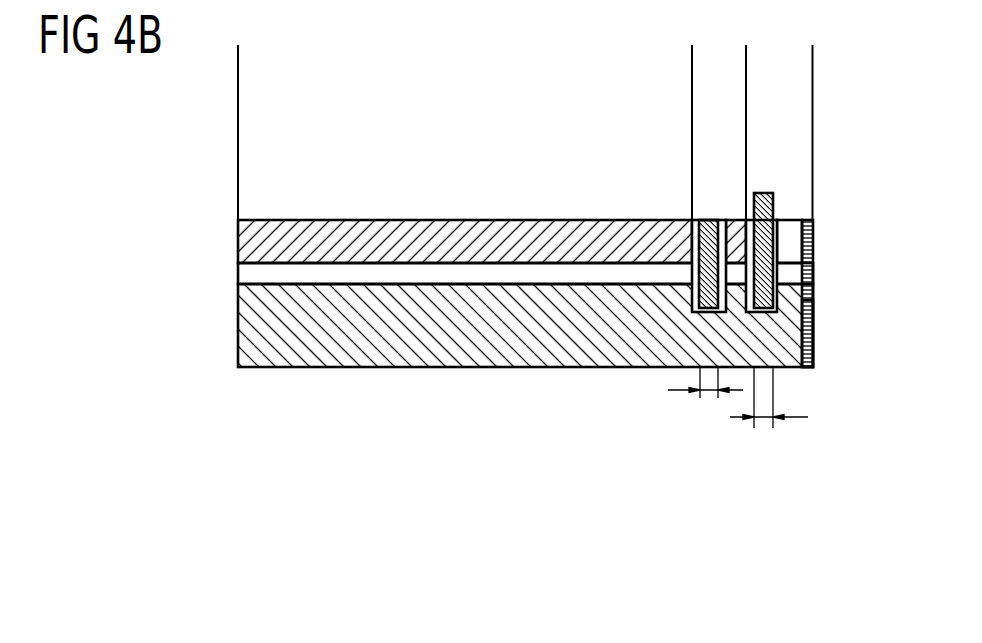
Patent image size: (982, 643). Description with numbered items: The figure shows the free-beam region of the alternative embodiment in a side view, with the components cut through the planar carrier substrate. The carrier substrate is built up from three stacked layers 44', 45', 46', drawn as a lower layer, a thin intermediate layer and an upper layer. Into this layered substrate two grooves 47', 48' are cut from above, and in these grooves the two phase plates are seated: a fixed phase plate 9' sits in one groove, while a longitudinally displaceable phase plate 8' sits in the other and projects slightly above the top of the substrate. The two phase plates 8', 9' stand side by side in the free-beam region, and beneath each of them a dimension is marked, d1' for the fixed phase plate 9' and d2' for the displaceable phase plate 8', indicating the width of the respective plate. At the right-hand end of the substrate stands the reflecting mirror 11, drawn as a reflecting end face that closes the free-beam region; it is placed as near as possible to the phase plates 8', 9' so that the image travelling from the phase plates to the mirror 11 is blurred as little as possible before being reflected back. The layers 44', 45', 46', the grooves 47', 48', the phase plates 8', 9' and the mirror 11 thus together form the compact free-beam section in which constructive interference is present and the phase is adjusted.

The carrier substrate layer 44' is at (492, 331).
The carrier substrate layer 45' is at (492, 285).
The carrier substrate layer 46' is at (487, 241).
The groove 47' is at (846, 293).
The groove 48' is at (682, 314).
The fixed phase plate 9' is at (717, 233).
The longitudinally displaceable phase plate 8' is at (772, 220).
The reflecting mirror 11 is at (813, 342).
The width of first electrode d1' is at (705, 400).
The width of second electrode d2' is at (769, 416).